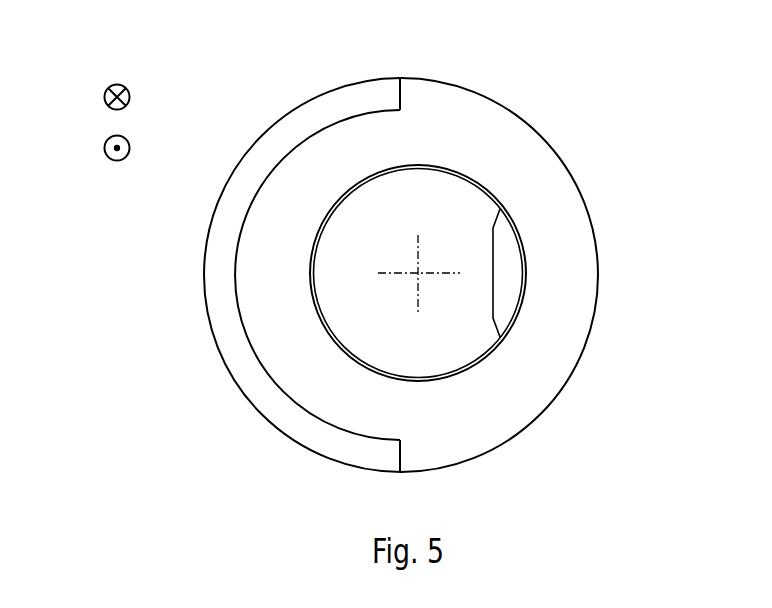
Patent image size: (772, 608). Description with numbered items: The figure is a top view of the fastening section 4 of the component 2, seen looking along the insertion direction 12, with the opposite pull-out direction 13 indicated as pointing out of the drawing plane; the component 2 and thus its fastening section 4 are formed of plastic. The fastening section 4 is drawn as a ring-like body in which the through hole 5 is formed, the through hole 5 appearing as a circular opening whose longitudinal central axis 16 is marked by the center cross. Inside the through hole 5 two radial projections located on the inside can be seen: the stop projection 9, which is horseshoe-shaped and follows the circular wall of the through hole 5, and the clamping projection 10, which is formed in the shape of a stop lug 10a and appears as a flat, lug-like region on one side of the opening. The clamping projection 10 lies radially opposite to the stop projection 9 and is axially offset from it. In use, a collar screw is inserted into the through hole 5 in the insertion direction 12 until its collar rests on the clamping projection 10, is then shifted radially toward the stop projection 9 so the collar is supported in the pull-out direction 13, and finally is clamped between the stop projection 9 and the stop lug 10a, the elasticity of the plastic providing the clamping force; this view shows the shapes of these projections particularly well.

The component 2 is at (457, 242).
The fastening section 4 is at (620, 150).
The through hole 5 is at (386, 239).
The stop projection 9 is at (312, 273).
The clamping projection 10 is at (592, 273).
The stop lug 10a is at (507, 270).
The insertion direction 12 is at (104, 97).
The pull-out direction 13 is at (104, 148).
The longitudinal central axis of the through hole 16 is at (417, 274).